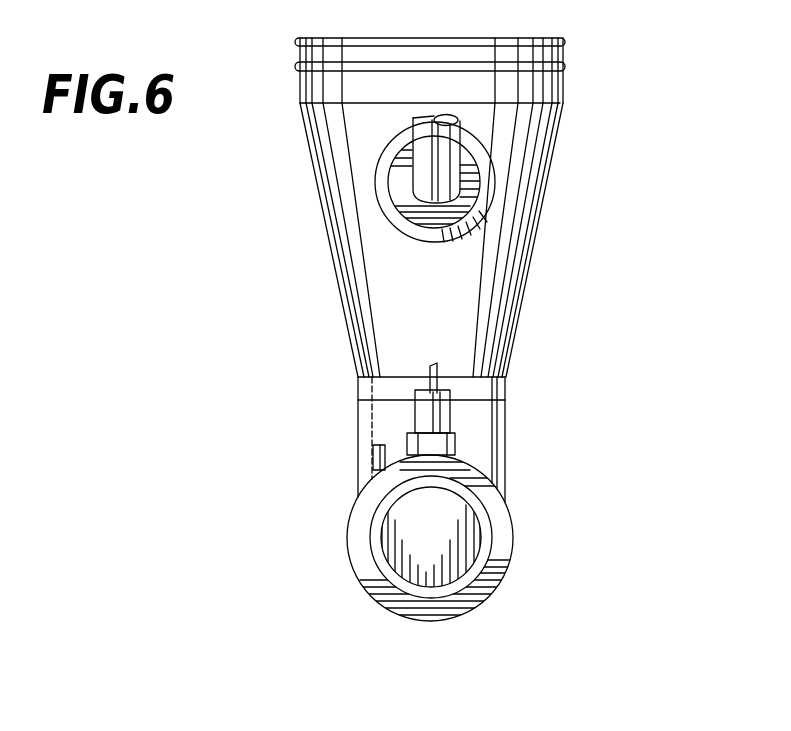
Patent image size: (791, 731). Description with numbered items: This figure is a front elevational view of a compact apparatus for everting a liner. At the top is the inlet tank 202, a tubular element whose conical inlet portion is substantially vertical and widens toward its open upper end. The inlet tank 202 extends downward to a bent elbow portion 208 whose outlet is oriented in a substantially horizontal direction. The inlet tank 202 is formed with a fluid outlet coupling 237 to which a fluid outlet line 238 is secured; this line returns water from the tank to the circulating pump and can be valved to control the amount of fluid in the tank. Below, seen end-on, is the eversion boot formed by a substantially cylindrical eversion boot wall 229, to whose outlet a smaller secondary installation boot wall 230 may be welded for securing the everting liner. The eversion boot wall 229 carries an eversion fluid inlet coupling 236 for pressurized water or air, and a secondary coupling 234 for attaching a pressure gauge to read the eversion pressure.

The inlet tank 202 is at (558, 178).
The bent elbow portion 208 is at (515, 400).
The eversion boot wall 229 is at (347, 556).
The secondary installation boot wall 230 is at (490, 535).
The secondary coupling 234 is at (372, 450).
The eversion fluid inlet coupling 236 is at (456, 449).
The fluid outlet coupling 237 is at (380, 198).
The fluid outlet line 238 is at (440, 152).